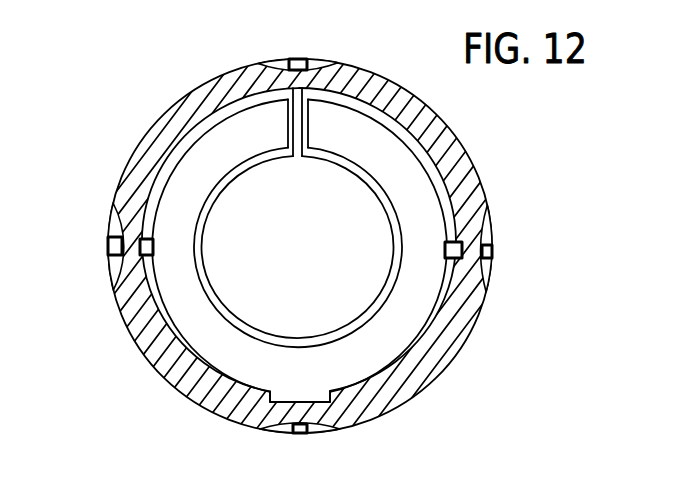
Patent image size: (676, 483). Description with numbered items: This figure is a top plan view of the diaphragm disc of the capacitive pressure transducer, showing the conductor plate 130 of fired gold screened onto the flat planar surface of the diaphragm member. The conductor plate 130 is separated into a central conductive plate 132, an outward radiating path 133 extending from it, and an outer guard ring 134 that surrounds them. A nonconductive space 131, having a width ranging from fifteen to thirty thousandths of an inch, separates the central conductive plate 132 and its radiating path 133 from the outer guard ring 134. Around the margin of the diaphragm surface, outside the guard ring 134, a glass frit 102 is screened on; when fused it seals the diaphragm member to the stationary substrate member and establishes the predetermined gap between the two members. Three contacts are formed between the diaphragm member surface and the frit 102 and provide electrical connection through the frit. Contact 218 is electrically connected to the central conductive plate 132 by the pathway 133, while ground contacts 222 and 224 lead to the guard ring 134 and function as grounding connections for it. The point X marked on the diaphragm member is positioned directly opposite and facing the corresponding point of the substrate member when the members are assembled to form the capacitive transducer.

The glass frit 102 is at (457, 152).
The conductor plate 130 is at (438, 207).
The nonconductive space 131 is at (378, 305).
The central conductive plate 132 is at (298, 247).
The outward radiating path 133 is at (298, 120).
The outer guard ring 134 is at (300, 385).
The contact 218 is at (299, 55).
The ground contact 222 is at (108, 245).
The ground contact 224 is at (492, 248).